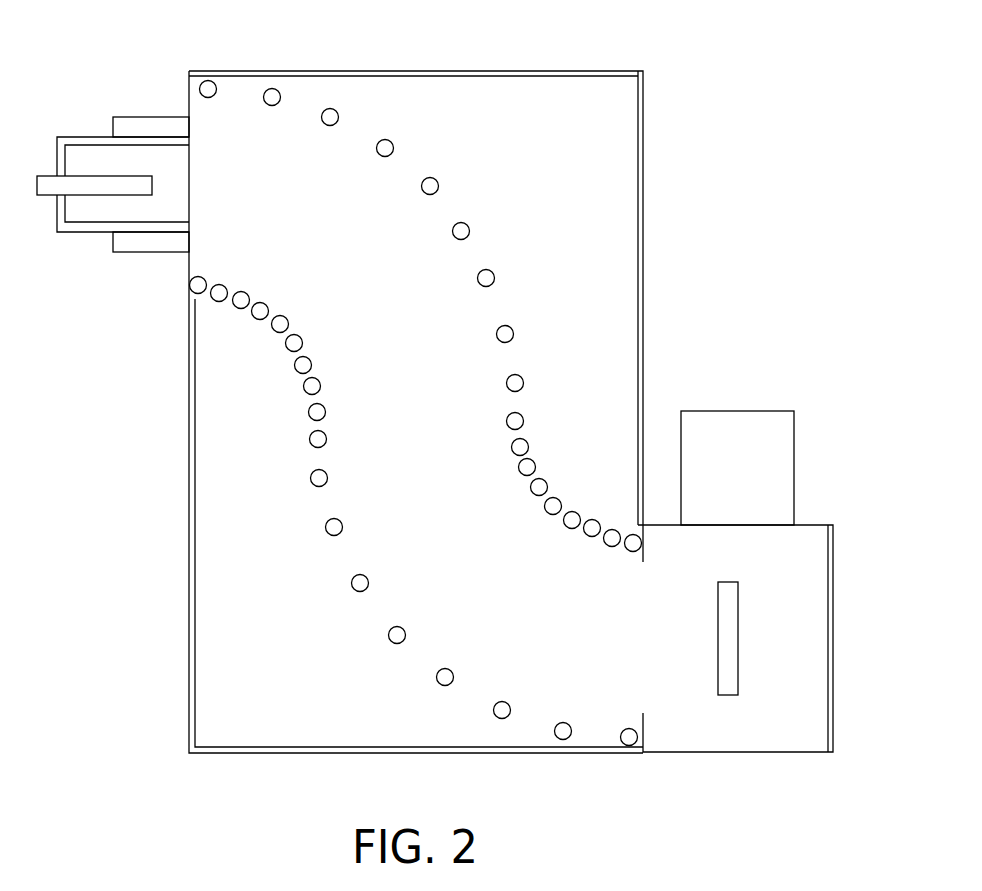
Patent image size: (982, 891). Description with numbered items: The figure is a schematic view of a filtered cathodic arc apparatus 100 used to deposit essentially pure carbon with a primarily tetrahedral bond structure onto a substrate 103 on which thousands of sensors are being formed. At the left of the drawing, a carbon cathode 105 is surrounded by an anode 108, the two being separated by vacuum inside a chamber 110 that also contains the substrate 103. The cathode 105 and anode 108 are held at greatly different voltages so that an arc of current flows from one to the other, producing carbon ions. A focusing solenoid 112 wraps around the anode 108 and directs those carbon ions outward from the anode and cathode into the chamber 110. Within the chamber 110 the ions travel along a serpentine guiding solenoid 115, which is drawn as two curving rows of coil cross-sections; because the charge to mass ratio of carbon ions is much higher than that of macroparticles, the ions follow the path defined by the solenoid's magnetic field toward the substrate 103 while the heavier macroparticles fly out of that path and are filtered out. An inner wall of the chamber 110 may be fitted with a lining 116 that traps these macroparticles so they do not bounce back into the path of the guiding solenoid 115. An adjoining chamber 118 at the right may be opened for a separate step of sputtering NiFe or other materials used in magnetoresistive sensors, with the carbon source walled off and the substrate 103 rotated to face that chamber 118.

The apparatus 100 is at (668, 145).
The substrate 103 is at (738, 637).
The carbon cathode 105 is at (93, 175).
The anode 108 is at (73, 233).
The chamber 110 is at (643, 261).
The focusing solenoid 112 is at (157, 117).
The serpentine guiding solenoid 115 is at (350, 582).
The lining 116 is at (530, 76).
The adjoining chamber 118 is at (794, 467).